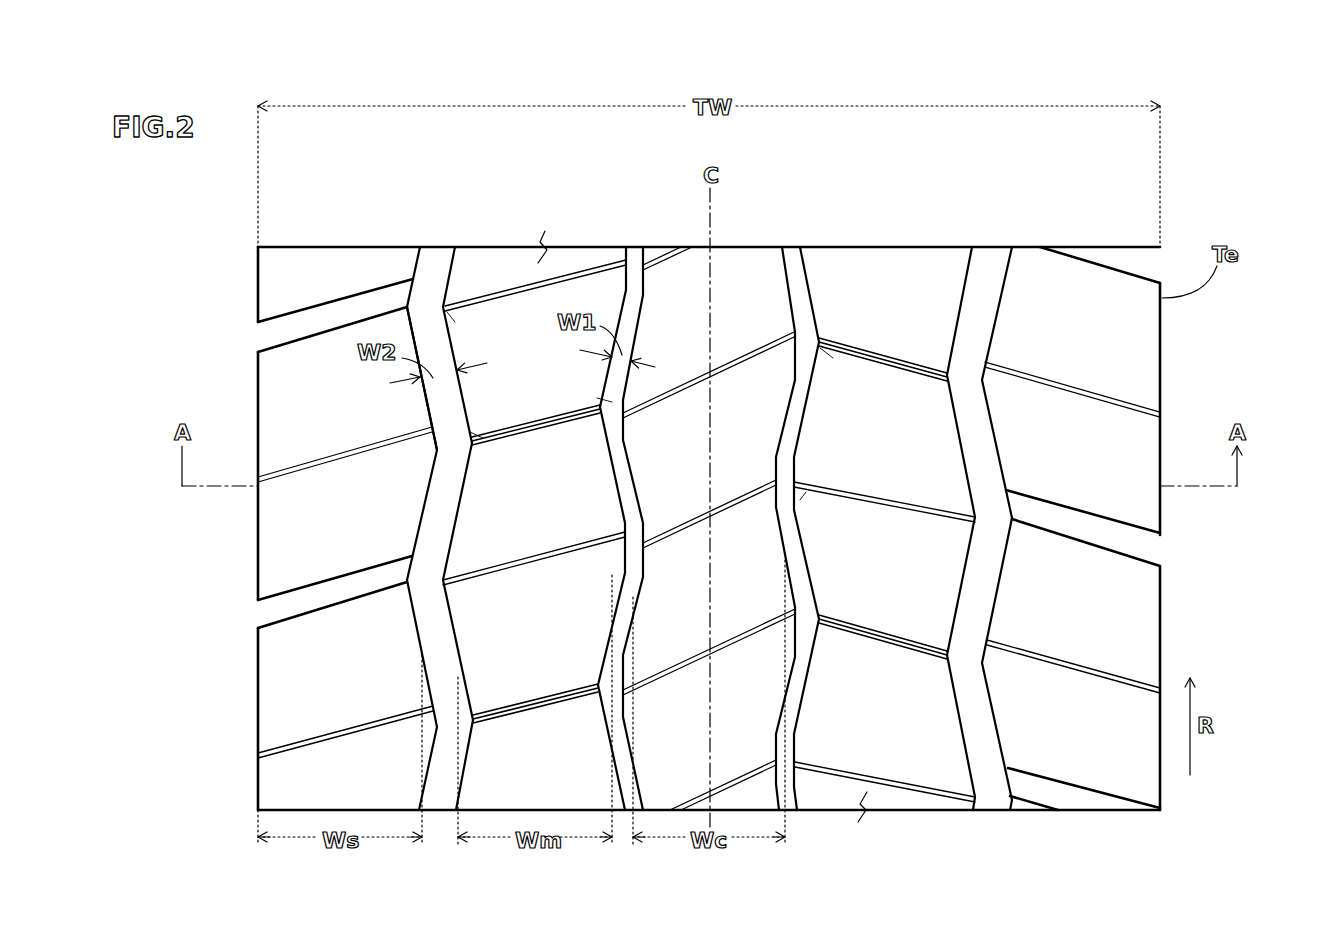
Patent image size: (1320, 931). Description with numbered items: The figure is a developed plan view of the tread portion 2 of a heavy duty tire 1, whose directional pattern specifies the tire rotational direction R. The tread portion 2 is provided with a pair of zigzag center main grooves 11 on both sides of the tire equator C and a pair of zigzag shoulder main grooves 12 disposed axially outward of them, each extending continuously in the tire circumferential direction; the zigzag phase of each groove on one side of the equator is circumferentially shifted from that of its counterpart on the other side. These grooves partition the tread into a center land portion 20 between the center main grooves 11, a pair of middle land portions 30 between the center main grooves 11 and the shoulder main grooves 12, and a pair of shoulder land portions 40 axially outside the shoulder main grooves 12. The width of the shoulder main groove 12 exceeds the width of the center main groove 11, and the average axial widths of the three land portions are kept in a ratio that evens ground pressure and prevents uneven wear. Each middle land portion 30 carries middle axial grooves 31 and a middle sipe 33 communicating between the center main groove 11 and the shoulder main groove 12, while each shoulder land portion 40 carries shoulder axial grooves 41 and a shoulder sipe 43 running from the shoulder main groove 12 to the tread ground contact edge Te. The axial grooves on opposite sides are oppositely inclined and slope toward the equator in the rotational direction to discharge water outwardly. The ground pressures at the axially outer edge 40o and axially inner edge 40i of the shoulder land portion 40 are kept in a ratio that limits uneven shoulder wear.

The tire 1 is at (951, 240).
The tread portion 2 is at (812, 242).
The center main groove 11 is at (633, 273).
The shoulder main groove 12 is at (432, 272).
The center land portion 20 is at (683, 312).
The middle land portion 30 is at (522, 318).
The middle axial groove 31 is at (527, 430).
The middle sipe 33 is at (520, 573).
The shoulder land portion 40 is at (322, 357).
The axially inner edge of the shoulder land portion 40i is at (430, 502).
The axially outer edge of the shoulder land portion 40o is at (258, 395).
The shoulder axial groove 41 is at (325, 592).
The shoulder sipe 43 is at (332, 735).